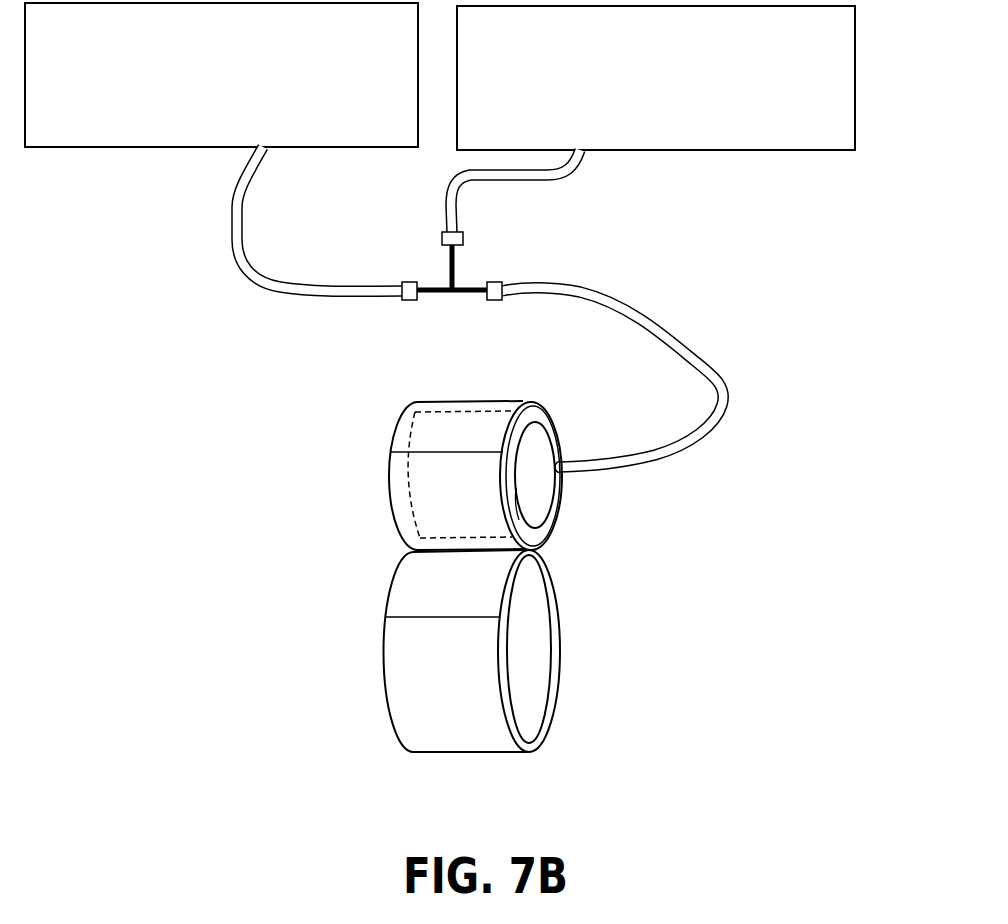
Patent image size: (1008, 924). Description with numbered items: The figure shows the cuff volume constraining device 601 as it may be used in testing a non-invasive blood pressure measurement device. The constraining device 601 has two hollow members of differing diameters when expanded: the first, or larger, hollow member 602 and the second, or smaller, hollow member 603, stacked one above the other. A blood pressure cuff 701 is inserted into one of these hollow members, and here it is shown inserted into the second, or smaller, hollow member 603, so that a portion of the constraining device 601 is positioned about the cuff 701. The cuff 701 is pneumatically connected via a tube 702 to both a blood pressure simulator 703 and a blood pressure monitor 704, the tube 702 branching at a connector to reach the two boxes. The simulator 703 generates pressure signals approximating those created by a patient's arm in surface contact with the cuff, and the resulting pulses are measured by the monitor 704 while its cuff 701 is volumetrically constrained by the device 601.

The cuff volume constraining device 601 is at (473, 467).
The first hollow member 602 is at (383, 690).
The second hollow member 603 is at (388, 500).
The blood pressure cuff 701 is at (560, 508).
The tube 702 is at (742, 382).
The blood pressure simulator 703 is at (682, 137).
The blood pressure monitor 704 is at (248, 135).